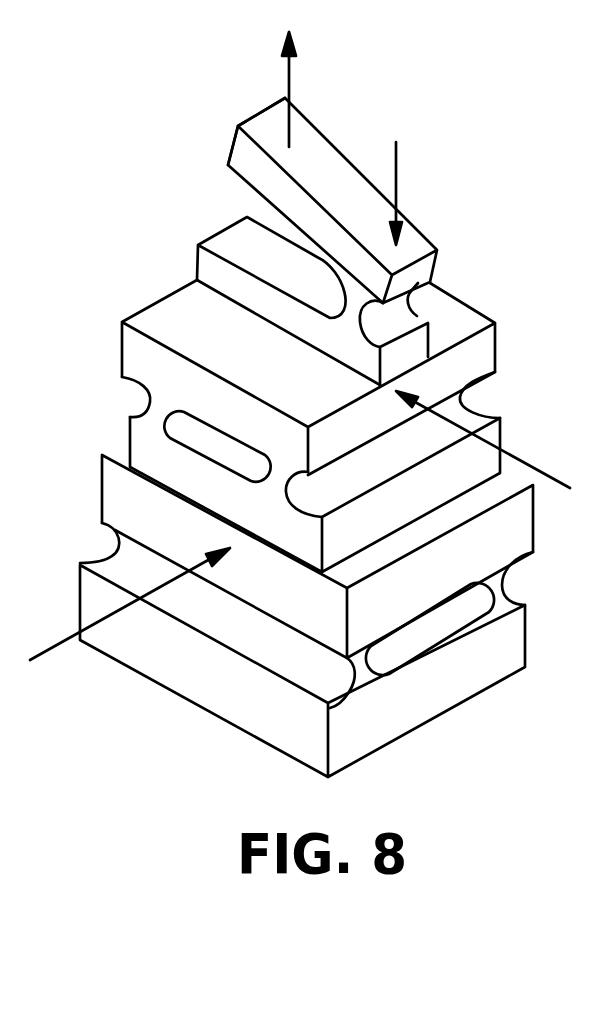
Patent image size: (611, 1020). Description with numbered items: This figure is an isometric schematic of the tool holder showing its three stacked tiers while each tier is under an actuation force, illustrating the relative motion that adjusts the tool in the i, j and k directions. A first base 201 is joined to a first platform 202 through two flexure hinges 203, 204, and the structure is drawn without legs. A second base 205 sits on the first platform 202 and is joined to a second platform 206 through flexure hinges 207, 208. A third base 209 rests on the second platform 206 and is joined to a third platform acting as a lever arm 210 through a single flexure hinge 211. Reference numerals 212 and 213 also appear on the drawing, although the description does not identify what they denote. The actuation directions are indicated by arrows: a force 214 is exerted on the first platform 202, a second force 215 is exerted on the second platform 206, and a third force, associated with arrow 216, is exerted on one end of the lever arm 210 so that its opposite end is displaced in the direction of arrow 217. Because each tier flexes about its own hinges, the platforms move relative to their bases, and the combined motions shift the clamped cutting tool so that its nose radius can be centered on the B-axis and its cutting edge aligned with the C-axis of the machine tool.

The first base 201 is at (192, 670).
The first platform 202 is at (125, 500).
The flexure hinge 203 is at (520, 583).
The flexure hinge 204 is at (387, 678).
The second base 205 is at (153, 447).
The second platform 206 is at (143, 358).
The flexure hinge 207 is at (147, 405).
The flexure hinge 208 is at (458, 407).
The third base 209 is at (213, 265).
The lever arm 210 is at (337, 177).
The flexure hinge 211 is at (395, 318).
The groove 212 is at (422, 270).
The beam end 213 is at (248, 158).
The force 214 is at (62, 647).
The second force 215 is at (512, 466).
The third force 216 is at (287, 76).
The direction of displacement 217 is at (399, 177).